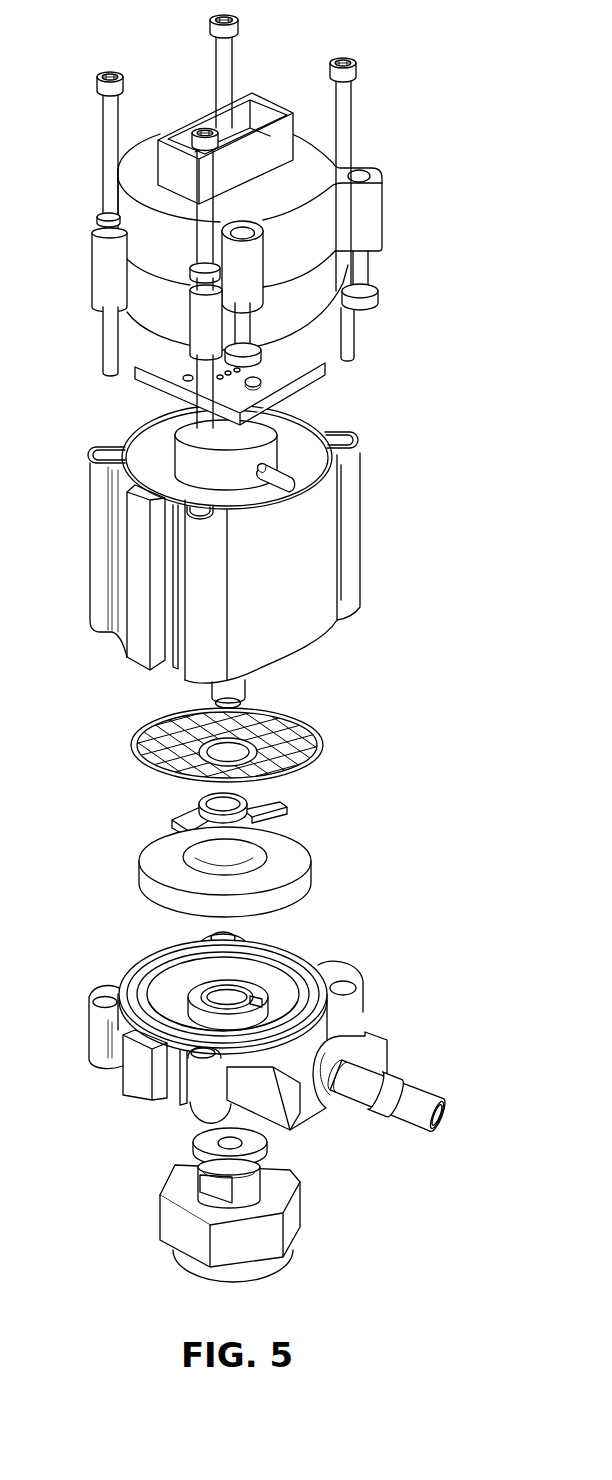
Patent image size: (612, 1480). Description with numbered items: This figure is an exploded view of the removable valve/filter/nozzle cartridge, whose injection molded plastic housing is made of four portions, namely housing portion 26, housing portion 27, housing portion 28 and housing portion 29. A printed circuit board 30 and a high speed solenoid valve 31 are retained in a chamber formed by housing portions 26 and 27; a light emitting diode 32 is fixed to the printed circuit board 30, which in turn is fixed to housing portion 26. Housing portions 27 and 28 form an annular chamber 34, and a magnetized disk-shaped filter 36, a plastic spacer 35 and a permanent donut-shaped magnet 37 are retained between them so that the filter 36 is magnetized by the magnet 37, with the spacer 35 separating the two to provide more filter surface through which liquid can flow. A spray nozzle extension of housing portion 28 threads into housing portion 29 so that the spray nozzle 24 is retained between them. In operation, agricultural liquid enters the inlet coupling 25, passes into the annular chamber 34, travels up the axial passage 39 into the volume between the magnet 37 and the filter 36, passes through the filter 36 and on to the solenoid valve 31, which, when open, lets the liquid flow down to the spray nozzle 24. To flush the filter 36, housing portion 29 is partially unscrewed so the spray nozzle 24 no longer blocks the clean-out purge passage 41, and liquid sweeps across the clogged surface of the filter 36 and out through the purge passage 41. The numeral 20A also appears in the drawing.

The fastening bolt 20A is at (223, 373).
The spray nozzle 24 is at (203, 1143).
The inlet coupling 25 is at (423, 1090).
The housing portion 26 is at (157, 252).
The housing portion 27 is at (103, 537).
The housing portion 28 is at (103, 1046).
The housing portion 29 is at (170, 1218).
The printed circuit board 30 is at (303, 372).
The high speed solenoid valve 31 is at (228, 486).
The light emitting diode 32 is at (283, 472).
The annular chamber 34 is at (269, 962).
The plastic spacer 35 is at (280, 804).
The magnetized disk-shaped filter 36 is at (323, 743).
The permanent donut-shaped magnet 37 is at (310, 850).
The passage 39 is at (198, 990).
The clean-out purge passage 41 is at (258, 1001).